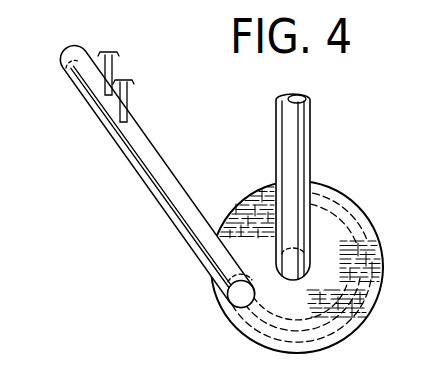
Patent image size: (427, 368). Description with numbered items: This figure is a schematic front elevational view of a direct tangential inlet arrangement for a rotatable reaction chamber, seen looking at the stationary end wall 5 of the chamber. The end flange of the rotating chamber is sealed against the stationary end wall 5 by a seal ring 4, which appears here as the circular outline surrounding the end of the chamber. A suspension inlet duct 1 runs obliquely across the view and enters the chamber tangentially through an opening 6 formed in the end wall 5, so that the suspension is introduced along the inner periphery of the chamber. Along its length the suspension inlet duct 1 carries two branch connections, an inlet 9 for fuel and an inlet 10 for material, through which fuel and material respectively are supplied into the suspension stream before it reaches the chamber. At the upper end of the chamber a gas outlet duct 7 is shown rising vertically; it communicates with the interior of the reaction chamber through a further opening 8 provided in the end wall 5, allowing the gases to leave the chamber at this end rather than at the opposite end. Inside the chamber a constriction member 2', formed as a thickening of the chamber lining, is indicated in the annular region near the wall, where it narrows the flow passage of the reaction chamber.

The suspension inlet duct 1 is at (60, 61).
The inlet for material 10 is at (113, 58).
The inlet for fuel 9 is at (128, 91).
The gas outlet duct 7 is at (293, 141).
The opening 8 is at (290, 274).
The seal ring 4 is at (357, 202).
The constriction member 2' is at (379, 263).
The stationary end wall 5 is at (373, 302).
The opening 6 is at (230, 301).